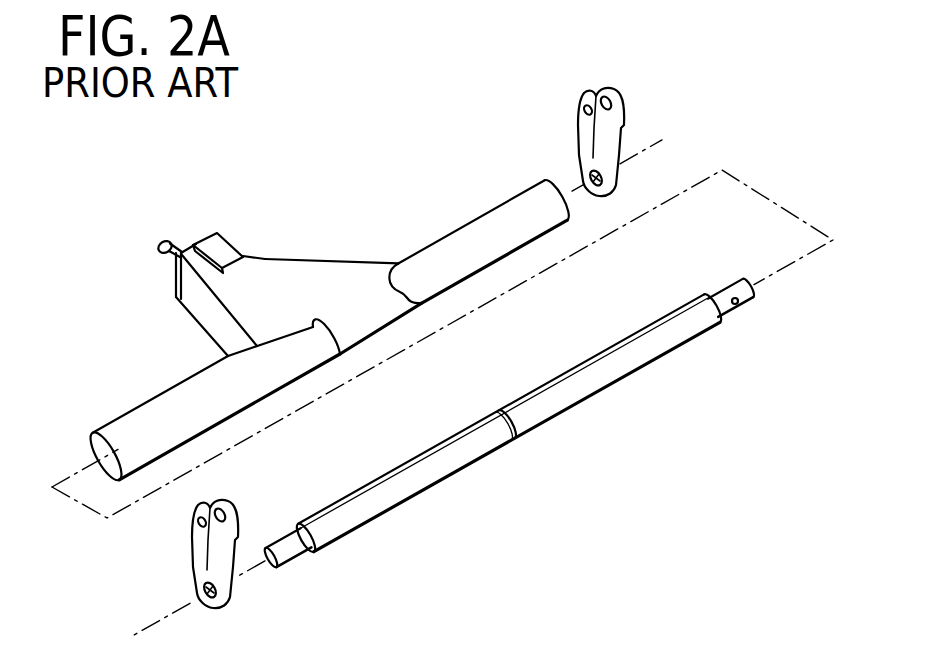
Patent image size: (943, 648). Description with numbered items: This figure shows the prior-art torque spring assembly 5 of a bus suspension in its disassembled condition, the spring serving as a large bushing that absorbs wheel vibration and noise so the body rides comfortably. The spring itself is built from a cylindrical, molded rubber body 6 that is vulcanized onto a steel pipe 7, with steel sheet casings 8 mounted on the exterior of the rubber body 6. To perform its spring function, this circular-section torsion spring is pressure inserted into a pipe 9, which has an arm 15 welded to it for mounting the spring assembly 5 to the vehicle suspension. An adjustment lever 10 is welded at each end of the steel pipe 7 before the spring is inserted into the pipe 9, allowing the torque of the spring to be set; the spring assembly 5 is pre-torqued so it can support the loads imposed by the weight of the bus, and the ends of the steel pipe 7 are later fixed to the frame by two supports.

The torque spring assembly 5 is at (714, 140).
The rubber body 6 is at (306, 560).
The steel pipe 7 is at (733, 308).
The steel sheet casings 8 is at (415, 490).
The pipe 9 is at (490, 211).
The adjustment lever 10 is at (622, 124).
The arm 15 is at (310, 275).